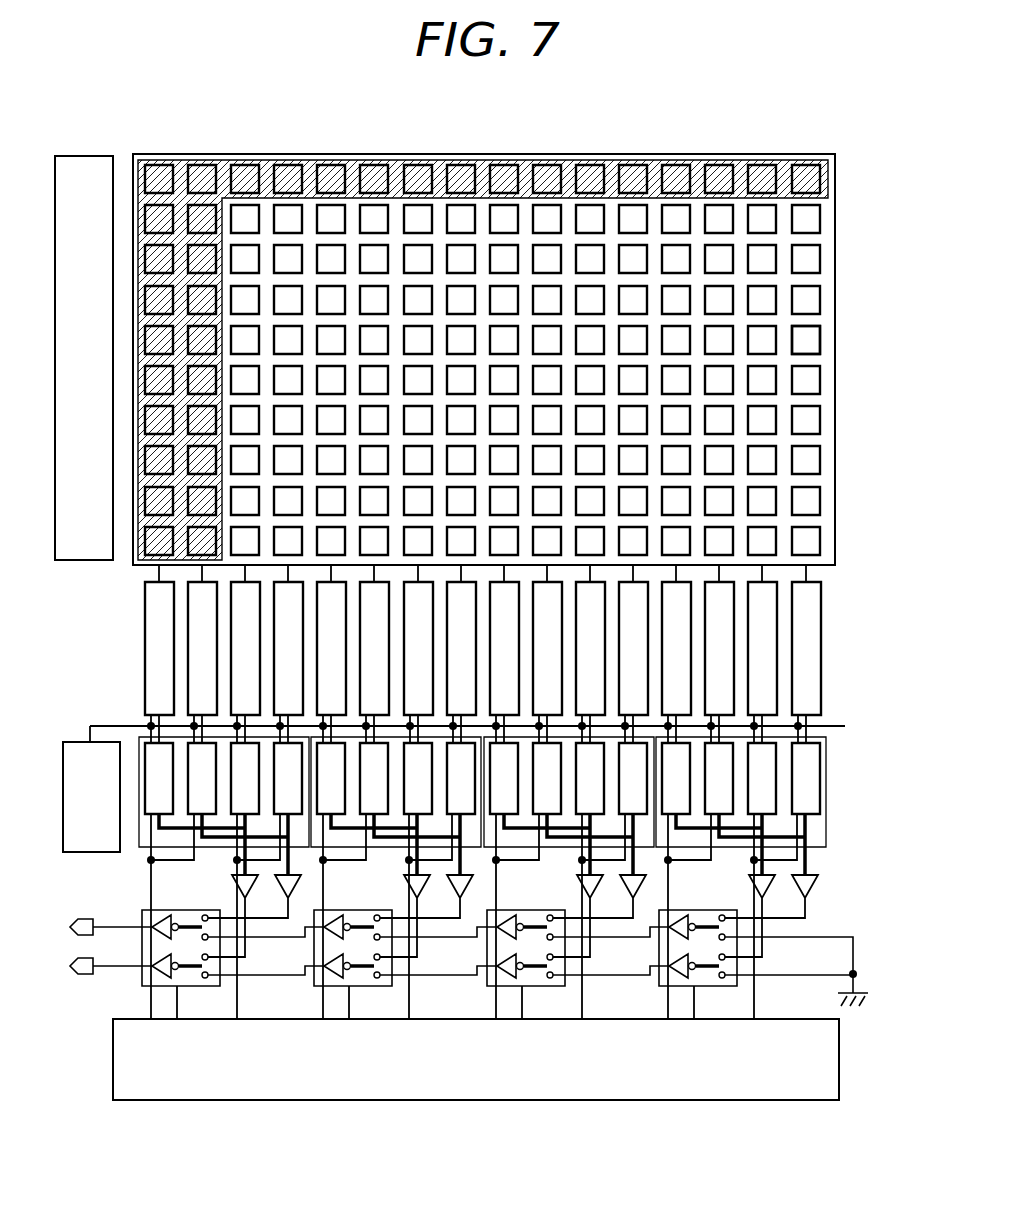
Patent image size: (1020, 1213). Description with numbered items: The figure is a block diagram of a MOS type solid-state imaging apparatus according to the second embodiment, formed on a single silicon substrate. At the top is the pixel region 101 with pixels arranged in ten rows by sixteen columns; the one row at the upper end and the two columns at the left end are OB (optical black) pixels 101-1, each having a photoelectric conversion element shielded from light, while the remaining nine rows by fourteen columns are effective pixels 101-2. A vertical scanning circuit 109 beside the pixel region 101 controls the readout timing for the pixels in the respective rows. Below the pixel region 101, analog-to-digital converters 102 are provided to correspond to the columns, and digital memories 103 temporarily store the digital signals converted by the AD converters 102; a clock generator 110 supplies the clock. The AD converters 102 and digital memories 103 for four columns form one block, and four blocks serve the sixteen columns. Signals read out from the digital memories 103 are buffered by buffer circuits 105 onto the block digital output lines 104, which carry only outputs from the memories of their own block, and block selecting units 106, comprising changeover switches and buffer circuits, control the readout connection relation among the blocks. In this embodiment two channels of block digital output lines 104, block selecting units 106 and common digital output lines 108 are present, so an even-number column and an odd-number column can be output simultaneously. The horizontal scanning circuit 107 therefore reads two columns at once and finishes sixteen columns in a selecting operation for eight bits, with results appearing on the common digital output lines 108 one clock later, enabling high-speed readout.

The pixel region 101 is at (545, 380).
The OB (optical black) pixels 101-1 is at (570, 160).
The effective pixels 101-2 is at (810, 357).
The analog-to-digital converters 102 is at (145, 607).
The digital memories 103 is at (145, 752).
The block digital output lines 104 is at (212, 850).
The buffer circuits 105 is at (255, 880).
The block selecting units 106 is at (178, 910).
The horizontal scanning circuit 107 is at (400, 1100).
The common digital output line 108 is at (85, 975).
The vertical scanning circuit 109 is at (88, 155).
The clock generator 110 is at (80, 742).